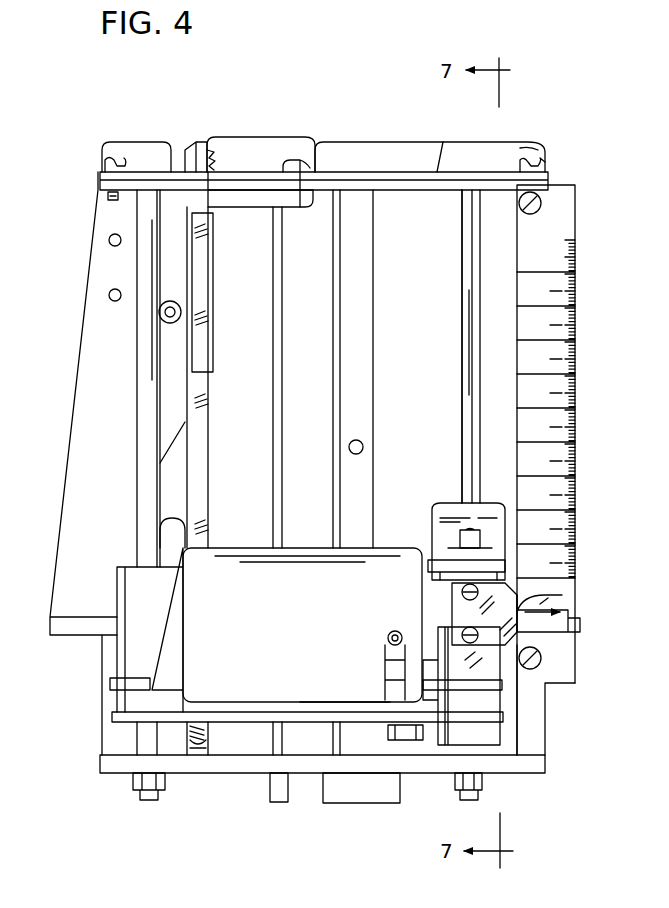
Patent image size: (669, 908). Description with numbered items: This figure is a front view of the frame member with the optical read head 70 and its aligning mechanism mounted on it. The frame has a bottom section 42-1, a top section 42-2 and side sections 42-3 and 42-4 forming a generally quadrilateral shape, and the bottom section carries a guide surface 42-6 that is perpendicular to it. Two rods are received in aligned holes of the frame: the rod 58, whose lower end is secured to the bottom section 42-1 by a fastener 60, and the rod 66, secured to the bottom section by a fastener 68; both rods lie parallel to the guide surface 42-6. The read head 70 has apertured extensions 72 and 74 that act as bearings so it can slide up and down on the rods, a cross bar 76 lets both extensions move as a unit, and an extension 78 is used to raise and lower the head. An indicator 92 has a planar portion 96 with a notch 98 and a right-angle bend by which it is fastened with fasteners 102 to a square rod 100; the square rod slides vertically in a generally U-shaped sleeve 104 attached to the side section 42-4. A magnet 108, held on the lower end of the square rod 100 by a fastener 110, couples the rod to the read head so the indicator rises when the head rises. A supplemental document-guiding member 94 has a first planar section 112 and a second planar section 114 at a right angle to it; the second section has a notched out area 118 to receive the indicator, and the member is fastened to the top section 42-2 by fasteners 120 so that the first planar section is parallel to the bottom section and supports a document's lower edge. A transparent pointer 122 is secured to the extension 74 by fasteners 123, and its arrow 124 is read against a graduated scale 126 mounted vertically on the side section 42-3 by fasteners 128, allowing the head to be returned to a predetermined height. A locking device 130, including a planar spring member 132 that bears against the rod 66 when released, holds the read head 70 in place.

The bottom section 42-1 is at (303, 762).
The top section 42-2 is at (395, 190).
The side section 42-3 is at (533, 740).
The side section 42-4 is at (97, 355).
The guide surface 42-6 is at (318, 312).
The rod 58 is at (148, 422).
The fastener 60 is at (133, 786).
The rod 66 is at (470, 376).
The fastener 68 is at (460, 785).
The optical read head 70 is at (210, 656).
The extension 72 is at (127, 580).
The extension 74 is at (485, 660).
The cross bar 76 is at (112, 717).
The extension 78 is at (490, 683).
The indicator 92 is at (286, 137).
The supplemental document-guiding member 94 is at (367, 142).
The planar portion 96 is at (257, 197).
The notch 98 is at (294, 207).
The square rod 100 is at (199, 150).
The fasteners 102 is at (218, 158).
The sleeve 104 is at (205, 305).
The magnet 108 is at (205, 735).
The fastener 110 is at (203, 748).
The first planar section 112 is at (443, 142).
The second planar section 114 is at (518, 150).
The notched out area 118 is at (178, 150).
The fasteners 120 is at (105, 162).
The transparent pointer 122 is at (565, 622).
The fasteners 123 is at (462, 634).
The arrow 124 is at (558, 593).
The graduated scale 126 is at (566, 284).
The fasteners 128 is at (541, 205).
The locking device 130 is at (445, 500).
The planar spring member 132 is at (440, 520).